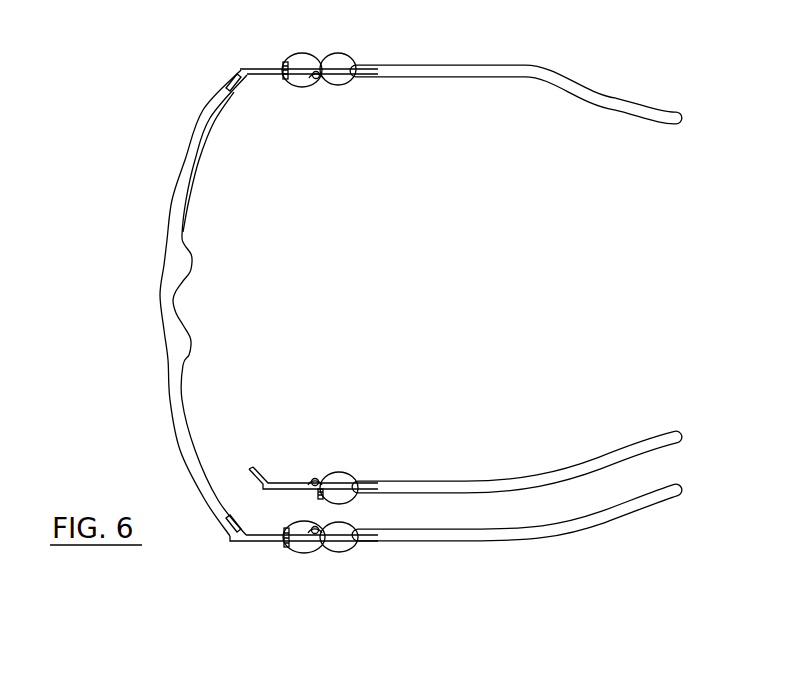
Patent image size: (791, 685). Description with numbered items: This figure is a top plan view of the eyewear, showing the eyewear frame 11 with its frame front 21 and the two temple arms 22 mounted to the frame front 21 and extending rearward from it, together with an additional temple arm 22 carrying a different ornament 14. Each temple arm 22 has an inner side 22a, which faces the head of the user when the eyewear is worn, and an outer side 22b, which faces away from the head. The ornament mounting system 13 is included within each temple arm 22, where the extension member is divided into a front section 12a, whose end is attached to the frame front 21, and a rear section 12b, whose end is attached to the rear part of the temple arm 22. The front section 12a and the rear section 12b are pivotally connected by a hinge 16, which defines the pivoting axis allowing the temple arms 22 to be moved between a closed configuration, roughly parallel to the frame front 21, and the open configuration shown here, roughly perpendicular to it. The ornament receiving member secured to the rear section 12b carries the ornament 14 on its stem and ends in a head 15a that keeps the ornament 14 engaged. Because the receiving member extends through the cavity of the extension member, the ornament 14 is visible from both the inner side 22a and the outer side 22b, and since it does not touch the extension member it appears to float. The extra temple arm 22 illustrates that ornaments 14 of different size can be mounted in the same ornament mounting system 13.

The eyewear frame 11 is at (222, 96).
The frame front 21 is at (178, 199).
The ornament mounting system 13 is at (306, 320).
The front section 12a is at (270, 62).
The rear section 12b is at (354, 62).
The ornament 14 is at (303, 55).
The head 15a is at (284, 80).
The hinge 16 is at (318, 80).
The temple arm 22 is at (545, 292).
The inner side 22a is at (558, 66).
The outer side 22b is at (510, 78).